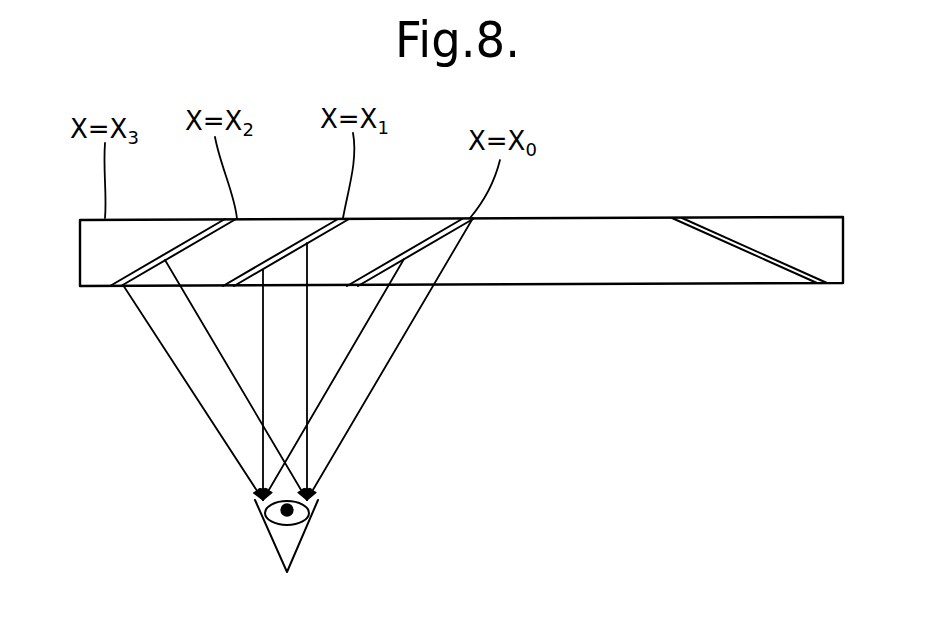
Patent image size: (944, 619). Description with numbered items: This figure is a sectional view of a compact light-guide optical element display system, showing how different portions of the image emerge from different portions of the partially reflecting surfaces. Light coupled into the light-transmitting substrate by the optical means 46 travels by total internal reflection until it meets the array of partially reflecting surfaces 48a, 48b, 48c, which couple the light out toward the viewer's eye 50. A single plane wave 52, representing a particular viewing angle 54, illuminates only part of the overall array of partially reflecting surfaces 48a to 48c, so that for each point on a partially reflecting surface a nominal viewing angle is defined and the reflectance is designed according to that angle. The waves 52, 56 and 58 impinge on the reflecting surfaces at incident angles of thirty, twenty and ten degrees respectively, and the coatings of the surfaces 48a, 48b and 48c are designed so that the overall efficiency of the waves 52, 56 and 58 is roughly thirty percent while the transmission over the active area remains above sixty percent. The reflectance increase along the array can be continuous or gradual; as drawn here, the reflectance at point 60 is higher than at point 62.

The optical means 46 is at (736, 245).
The partially reflecting surface 48a is at (420, 244).
The partially reflecting surface 48b is at (285, 250).
The partially reflecting surface 48c is at (178, 245).
The viewer's eye 50 is at (272, 548).
The plane wave 52 is at (377, 350).
The viewing angle 54 is at (322, 372).
The wave 56 is at (292, 412).
The wave 58 is at (205, 377).
The point 60 is at (366, 283).
The point 62 is at (455, 231).